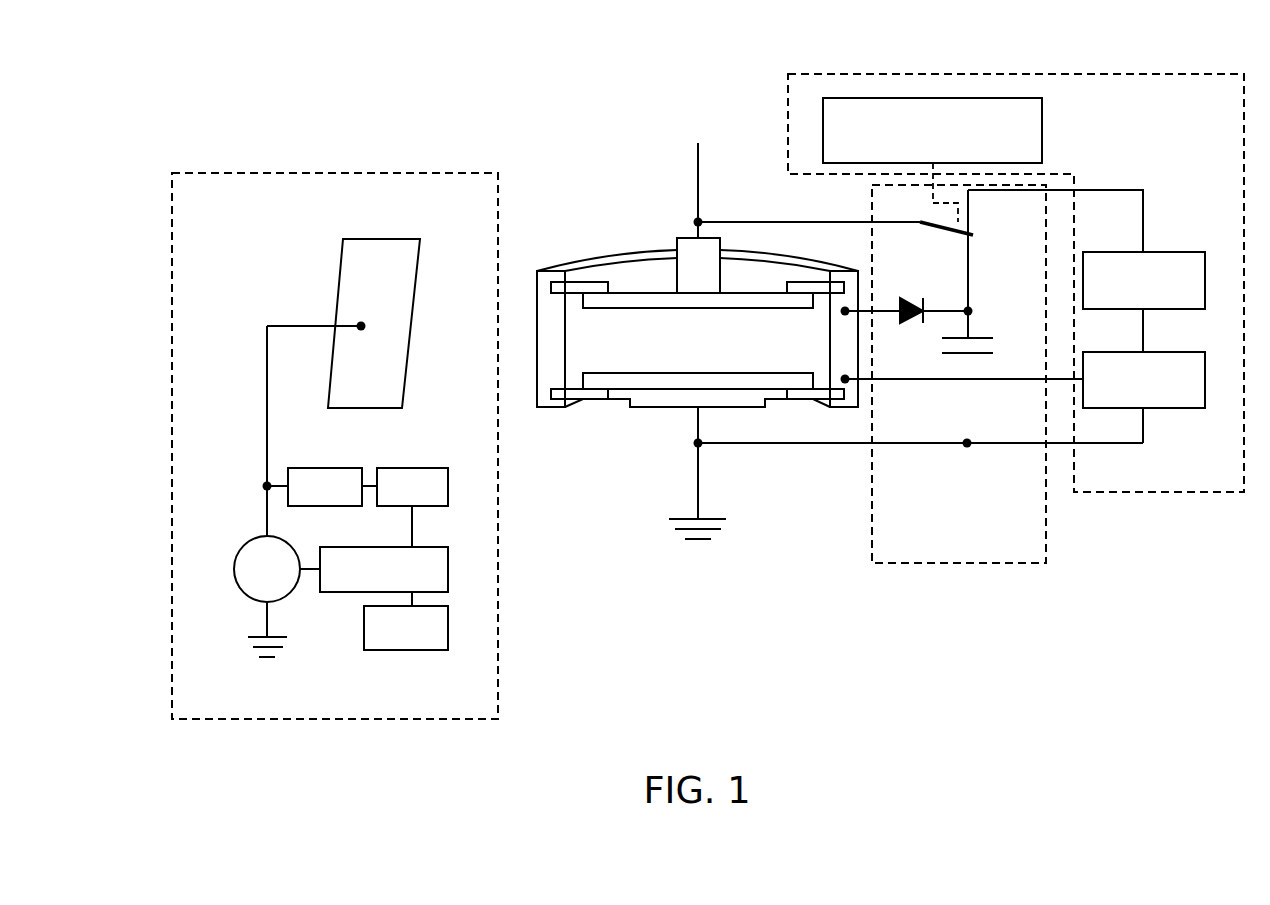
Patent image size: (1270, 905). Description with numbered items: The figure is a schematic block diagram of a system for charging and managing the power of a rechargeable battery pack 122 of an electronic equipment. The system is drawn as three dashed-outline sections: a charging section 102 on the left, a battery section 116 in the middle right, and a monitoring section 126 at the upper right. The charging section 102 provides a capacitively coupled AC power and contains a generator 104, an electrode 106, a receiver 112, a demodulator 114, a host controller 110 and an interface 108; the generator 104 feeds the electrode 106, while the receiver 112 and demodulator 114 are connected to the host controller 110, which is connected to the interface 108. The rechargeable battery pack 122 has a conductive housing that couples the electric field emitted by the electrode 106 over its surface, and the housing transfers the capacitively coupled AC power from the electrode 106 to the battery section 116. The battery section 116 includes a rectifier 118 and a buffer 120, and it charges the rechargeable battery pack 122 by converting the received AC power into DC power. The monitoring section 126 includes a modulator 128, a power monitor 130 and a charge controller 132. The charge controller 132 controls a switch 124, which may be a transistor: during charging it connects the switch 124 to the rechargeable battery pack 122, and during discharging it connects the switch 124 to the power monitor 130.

The charging section 102 is at (172, 326).
The generator 104 is at (243, 545).
The electrode 106 is at (335, 297).
The interface 108 is at (386, 640).
The host controller 110 is at (367, 582).
The receiver 112 is at (305, 501).
The demodulator 114 is at (392, 501).
The battery section 116 is at (988, 564).
The rectifier 118 is at (898, 285).
The buffer 120 is at (988, 337).
The rechargeable battery pack 122 is at (655, 250).
The switch 124 is at (991, 240).
The monitoring section 126 is at (788, 102).
The modulator 128 is at (1124, 392).
The power monitor 130 is at (1124, 293).
The charge controller 132 is at (912, 143).